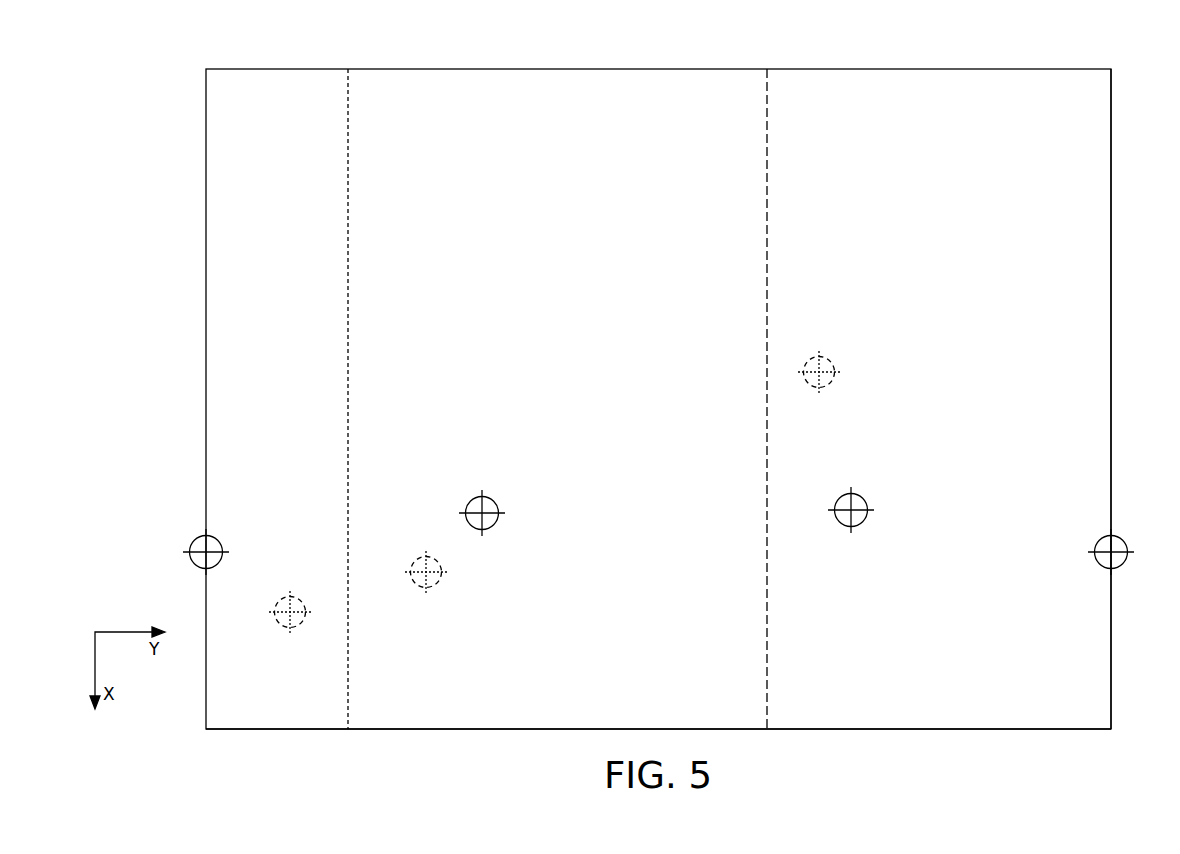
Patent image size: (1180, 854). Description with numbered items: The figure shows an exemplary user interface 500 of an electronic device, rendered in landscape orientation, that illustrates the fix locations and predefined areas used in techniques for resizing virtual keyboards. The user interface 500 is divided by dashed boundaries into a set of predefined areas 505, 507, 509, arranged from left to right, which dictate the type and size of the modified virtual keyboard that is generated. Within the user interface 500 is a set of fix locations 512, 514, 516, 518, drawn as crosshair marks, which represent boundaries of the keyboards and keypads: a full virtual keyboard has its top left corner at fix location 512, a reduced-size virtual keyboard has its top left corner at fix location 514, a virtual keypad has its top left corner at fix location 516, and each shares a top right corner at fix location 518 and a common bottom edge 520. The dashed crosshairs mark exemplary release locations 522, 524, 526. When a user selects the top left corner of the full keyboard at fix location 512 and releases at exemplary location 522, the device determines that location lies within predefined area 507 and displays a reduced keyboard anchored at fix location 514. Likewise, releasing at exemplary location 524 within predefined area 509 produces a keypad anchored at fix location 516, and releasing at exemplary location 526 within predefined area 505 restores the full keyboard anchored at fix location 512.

The user interface 500 is at (1111, 88).
The predefined area 505 is at (299, 135).
The predefined area 507 is at (709, 135).
The predefined area 509 is at (1064, 135).
The fix location 512 is at (218, 538).
The fix location 514 is at (492, 497).
The fix location 516 is at (862, 496).
The fix location 518 is at (1100, 538).
The bottom edge 520 is at (866, 729).
The exemplary location 522 is at (440, 585).
The exemplary location 524 is at (832, 361).
The exemplary location 526 is at (300, 596).